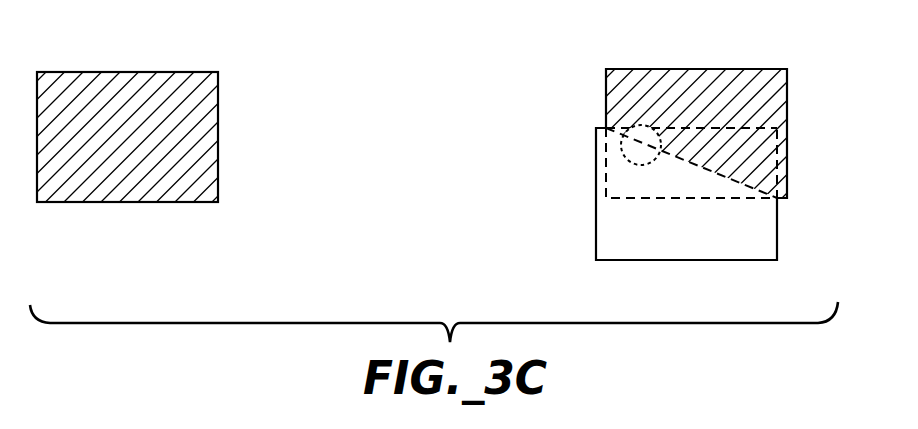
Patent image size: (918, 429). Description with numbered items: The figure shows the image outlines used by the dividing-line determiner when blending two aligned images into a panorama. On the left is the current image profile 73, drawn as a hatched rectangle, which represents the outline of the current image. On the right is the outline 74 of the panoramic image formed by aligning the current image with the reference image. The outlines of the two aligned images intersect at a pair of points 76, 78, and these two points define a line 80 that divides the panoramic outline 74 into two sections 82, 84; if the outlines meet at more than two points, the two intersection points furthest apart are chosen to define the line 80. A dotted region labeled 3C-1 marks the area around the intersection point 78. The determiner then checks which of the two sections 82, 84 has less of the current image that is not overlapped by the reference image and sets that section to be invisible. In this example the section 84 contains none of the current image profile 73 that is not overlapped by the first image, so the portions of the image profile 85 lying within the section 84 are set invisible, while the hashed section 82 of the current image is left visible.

The current image profile 73 is at (218, 123).
The section 82 is at (740, 77).
The outline 74 is at (615, 262).
The point 78 is at (607, 128).
The line 80 is at (697, 167).
The detail region 3C-1 is at (620, 155).
The image profile 85 is at (627, 185).
The point 76 is at (777, 200).
The section 84 is at (753, 250).